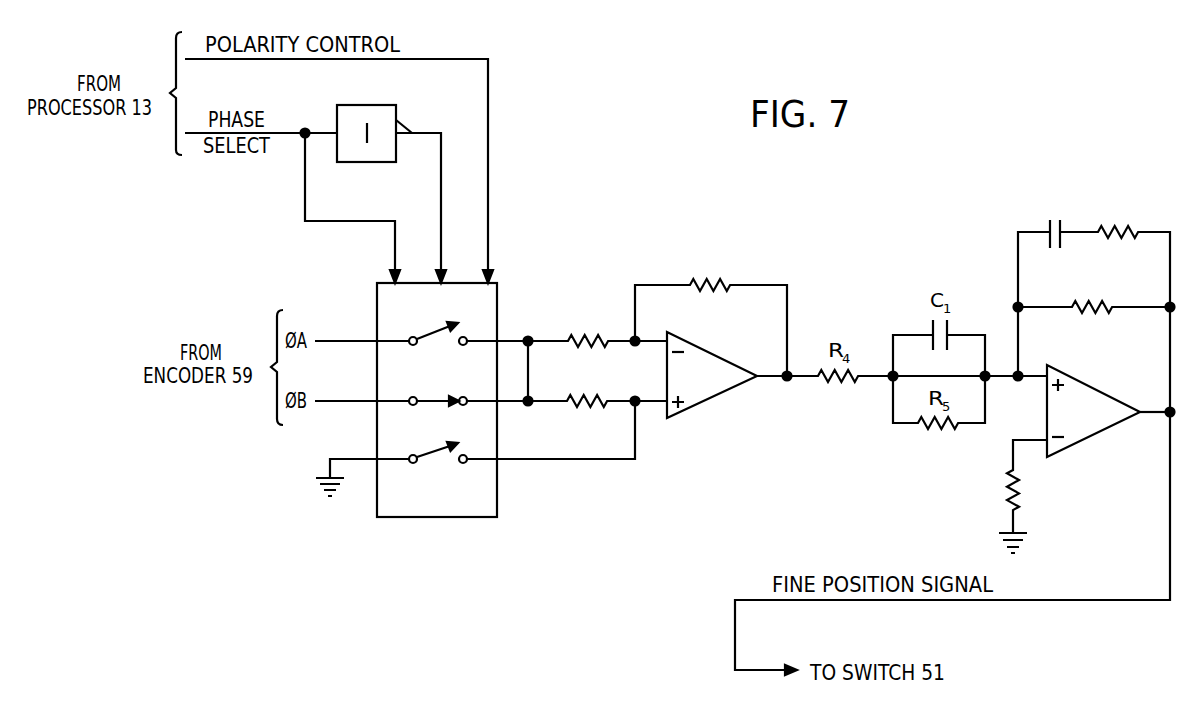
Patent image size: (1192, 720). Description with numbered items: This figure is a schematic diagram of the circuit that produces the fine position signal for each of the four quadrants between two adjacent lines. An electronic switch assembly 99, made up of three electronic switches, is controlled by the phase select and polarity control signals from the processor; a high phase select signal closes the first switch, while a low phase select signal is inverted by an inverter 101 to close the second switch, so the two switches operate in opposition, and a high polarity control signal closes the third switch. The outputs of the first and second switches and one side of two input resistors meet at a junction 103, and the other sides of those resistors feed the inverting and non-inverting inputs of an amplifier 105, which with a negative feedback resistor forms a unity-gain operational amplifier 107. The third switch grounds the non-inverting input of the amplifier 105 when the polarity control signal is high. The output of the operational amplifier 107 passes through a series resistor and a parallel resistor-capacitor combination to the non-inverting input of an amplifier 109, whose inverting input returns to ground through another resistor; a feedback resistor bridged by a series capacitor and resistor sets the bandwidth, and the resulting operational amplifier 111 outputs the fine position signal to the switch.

The electronic switch assembly 99 is at (497, 507).
The inverter 101 is at (369, 113).
The junction 103 is at (528, 341).
The amplifier 105 is at (717, 397).
The operational amplifier 107 is at (648, 343).
The amplifier 109 is at (1100, 432).
The operational amplifier 111 is at (1076, 343).